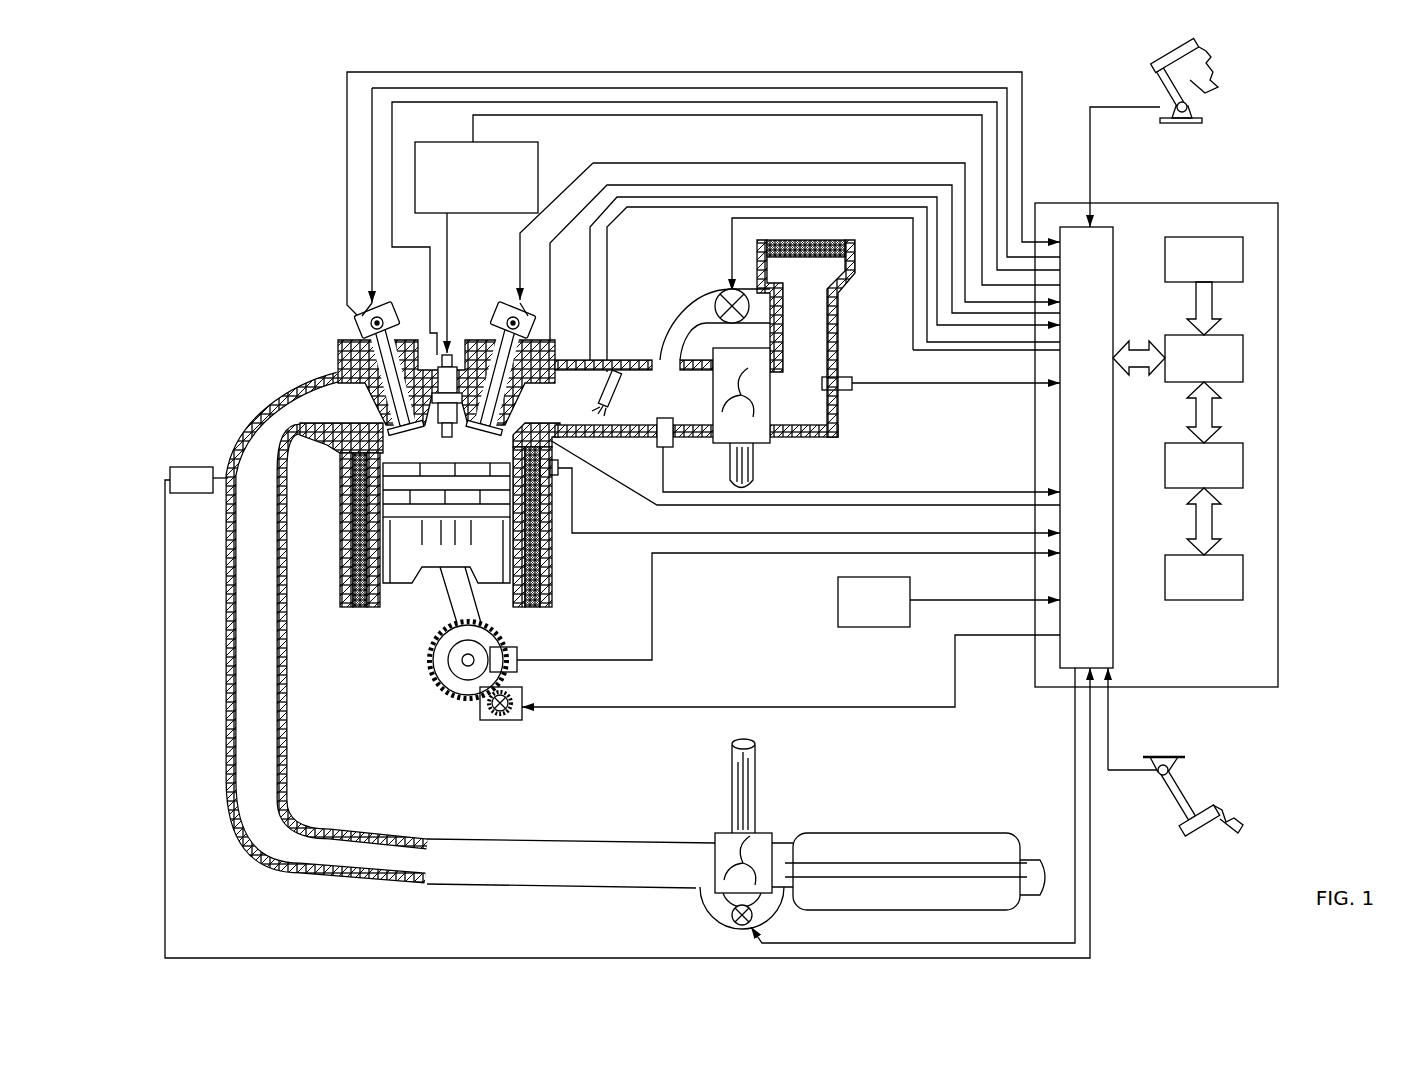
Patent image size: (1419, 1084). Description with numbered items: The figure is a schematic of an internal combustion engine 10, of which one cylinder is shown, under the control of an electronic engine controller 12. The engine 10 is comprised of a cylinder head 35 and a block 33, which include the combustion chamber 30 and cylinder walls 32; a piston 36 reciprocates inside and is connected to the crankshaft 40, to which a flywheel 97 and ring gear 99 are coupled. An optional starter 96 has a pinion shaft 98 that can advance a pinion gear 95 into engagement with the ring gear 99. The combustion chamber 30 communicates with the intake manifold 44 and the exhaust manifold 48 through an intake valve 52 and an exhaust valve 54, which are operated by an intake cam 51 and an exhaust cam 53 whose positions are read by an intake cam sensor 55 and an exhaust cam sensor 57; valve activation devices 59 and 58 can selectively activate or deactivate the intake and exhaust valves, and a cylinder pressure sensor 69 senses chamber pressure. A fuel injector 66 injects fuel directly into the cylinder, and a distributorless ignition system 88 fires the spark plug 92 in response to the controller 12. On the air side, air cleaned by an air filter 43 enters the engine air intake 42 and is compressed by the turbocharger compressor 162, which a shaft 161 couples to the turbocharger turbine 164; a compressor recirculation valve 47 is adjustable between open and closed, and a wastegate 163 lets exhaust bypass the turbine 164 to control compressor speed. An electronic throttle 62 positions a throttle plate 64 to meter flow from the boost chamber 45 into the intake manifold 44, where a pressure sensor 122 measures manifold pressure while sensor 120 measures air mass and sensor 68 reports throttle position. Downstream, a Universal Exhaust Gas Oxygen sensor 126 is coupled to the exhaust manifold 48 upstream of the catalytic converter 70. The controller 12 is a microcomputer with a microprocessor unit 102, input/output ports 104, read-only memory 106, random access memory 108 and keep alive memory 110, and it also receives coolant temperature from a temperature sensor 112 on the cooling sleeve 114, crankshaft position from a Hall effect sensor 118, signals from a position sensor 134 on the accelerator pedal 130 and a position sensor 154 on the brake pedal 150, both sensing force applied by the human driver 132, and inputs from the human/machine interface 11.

The internal combustion engine 10 is at (268, 290).
The human/machine interface 11 is at (874, 602).
The electronic engine controller 12 is at (1268, 203).
The combustion chamber 30 is at (403, 455).
The cylinder walls 32 is at (388, 592).
The block 33 is at (337, 490).
The cylinder head 35 is at (338, 345).
The piston 36 is at (428, 555).
The crankshaft 40 is at (452, 690).
The engine air intake 42 is at (672, 262).
The air filter 43 is at (812, 258).
The intake manifold 44 is at (559, 413).
The boost chamber 45 is at (663, 413).
The compressor recirculation valve 47 is at (720, 297).
The exhaust manifold 48 is at (292, 418).
The intake cam 51 is at (503, 310).
The intake valve 52 is at (490, 396).
The exhaust cam 53 is at (384, 304).
The exhaust valve 54 is at (396, 428).
The intake cam sensor 55 is at (527, 320).
The exhaust cam sensor 57 is at (357, 310).
The valve activation device 58 is at (385, 320).
The valve activation device 59 is at (508, 325).
The electronic throttle 62 is at (612, 392).
The throttle plate 64 is at (606, 404).
The fuel injector 66 is at (555, 452).
The throttle position sensor 68 is at (556, 372).
The cylinder pressure sensor 69 is at (449, 436).
The catalytic converter 70 is at (838, 833).
The distributorless ignition system 88 is at (538, 154).
The spark plug 92 is at (457, 378).
The pinion gear 95 is at (507, 720).
The starter 96 is at (522, 716).
The flywheel 97 is at (447, 672).
The pinion shaft 98 is at (490, 716).
The ring gear 99 is at (460, 702).
The microprocessor unit 102 is at (1243, 355).
The input/output ports 104 is at (1142, 212).
The read-only memory 106 is at (1243, 255).
The random access memory 108 is at (1243, 462).
The keep alive memory 110 is at (1243, 572).
The temperature sensor 112 is at (560, 478).
The cooling sleeve 114 is at (553, 558).
The Hall effect sensor 118 is at (517, 650).
The air mass sensor 120 is at (850, 377).
The pressure sensor 122 is at (659, 446).
The Universal Exhaust Gas Oxygen sensor 126 is at (170, 470).
The accelerator pedal 130 is at (1160, 80).
The human driver 132 is at (1213, 62).
The position sensor 134 is at (1195, 108).
The brake pedal 150 is at (1186, 820).
The position sensor 154 is at (1157, 770).
The shaft 161 is at (730, 458).
The turbocharger compressor 162 is at (752, 420).
The wastegate 163 is at (735, 920).
The turbocharger turbine 164 is at (718, 833).